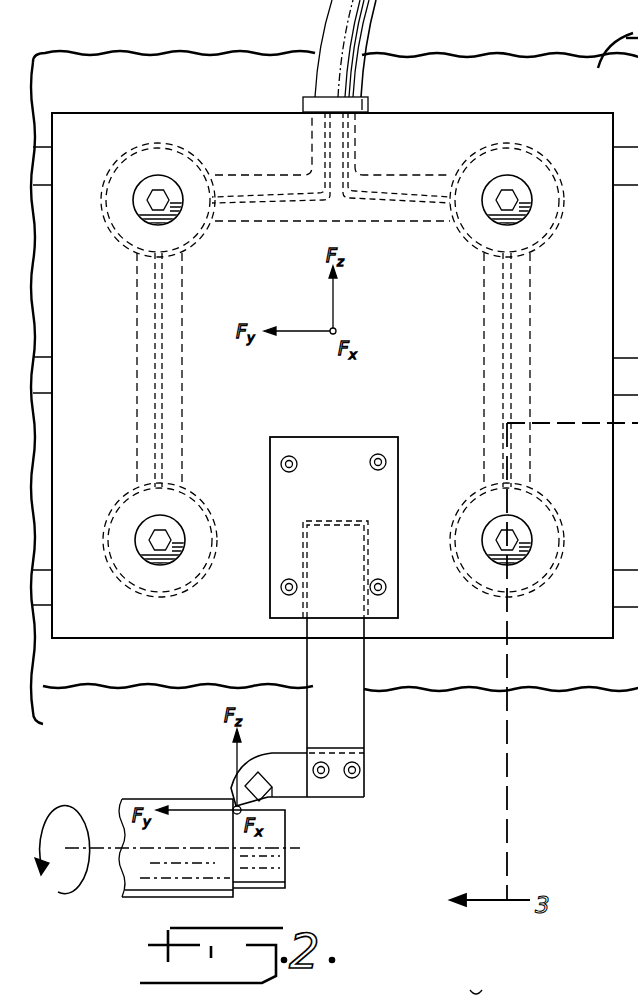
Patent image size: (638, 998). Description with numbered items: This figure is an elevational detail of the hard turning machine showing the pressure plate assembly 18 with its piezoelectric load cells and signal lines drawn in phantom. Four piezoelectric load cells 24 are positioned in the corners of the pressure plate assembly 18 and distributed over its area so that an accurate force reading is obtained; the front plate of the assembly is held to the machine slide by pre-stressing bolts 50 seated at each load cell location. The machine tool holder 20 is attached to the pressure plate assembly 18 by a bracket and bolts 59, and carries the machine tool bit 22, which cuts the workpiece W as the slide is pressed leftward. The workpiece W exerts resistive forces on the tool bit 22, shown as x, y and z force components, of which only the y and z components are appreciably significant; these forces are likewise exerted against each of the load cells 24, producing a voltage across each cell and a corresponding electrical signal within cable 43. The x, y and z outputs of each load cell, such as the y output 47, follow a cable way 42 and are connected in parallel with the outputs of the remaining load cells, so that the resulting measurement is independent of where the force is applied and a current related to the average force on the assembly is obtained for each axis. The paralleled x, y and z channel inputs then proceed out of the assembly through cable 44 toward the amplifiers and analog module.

The pressure plate assembly 18 is at (208, 628).
The machine tool holder 20 is at (360, 720).
The machine tool bit 22 is at (293, 787).
The piezoelectric load cells 24 is at (196, 250).
The cable way 42 is at (428, 180).
The cable 43 is at (372, 191).
The cable 44 is at (335, 3).
The y output 47 is at (470, 994).
The pre-stressing bolts 50 is at (148, 215).
The bolts 59 is at (370, 467).
The workpiece W is at (143, 888).